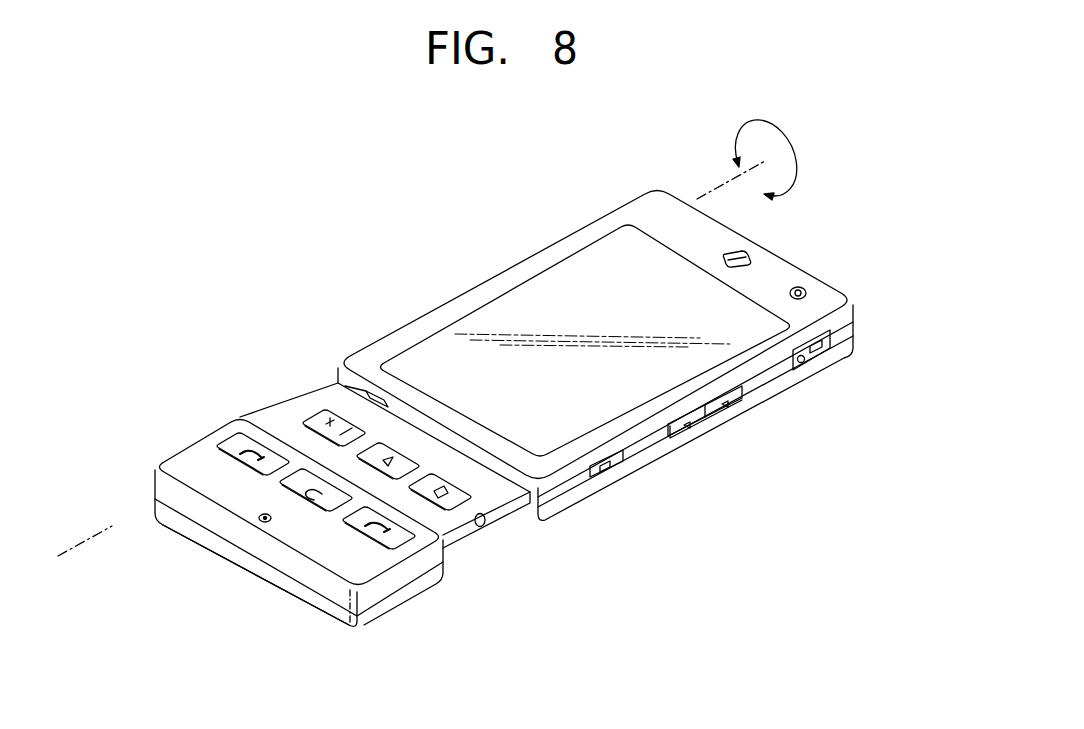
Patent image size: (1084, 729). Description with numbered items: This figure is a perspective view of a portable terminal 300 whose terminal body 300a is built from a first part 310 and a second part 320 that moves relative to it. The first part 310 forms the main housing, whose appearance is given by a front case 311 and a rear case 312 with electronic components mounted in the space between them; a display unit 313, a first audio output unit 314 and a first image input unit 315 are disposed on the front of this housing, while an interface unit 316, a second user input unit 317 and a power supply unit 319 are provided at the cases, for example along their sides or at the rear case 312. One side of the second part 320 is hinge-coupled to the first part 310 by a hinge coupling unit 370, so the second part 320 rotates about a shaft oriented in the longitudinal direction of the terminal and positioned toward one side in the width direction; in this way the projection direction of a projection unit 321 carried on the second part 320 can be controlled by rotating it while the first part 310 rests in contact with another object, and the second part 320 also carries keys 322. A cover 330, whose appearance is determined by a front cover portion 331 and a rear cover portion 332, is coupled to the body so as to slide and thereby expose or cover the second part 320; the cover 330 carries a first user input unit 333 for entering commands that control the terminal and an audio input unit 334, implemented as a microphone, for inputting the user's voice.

The portable terminal 300 is at (378, 245).
The main body assembly 300a is at (667, 547).
The first part 310 is at (593, 505).
The front case 311 is at (853, 319).
The rear case 312 is at (853, 337).
The display unit 313 is at (535, 300).
The audio output unit 314 is at (745, 257).
The camera 315 is at (805, 290).
The side key 316 is at (817, 358).
The side key 317 is at (722, 413).
The guide slot 319 is at (650, 458).
The second part 320 is at (522, 522).
The projection unit 321 is at (488, 526).
The first manipulation unit keys 322 is at (310, 420).
The third body 330 is at (198, 450).
The front case of third body 331 is at (168, 486).
The rear case of third body 332 is at (157, 507).
The second manipulation unit keys 333 is at (233, 440).
The microphone 334 is at (262, 521).
The hinge coupling unit 370 is at (360, 388).